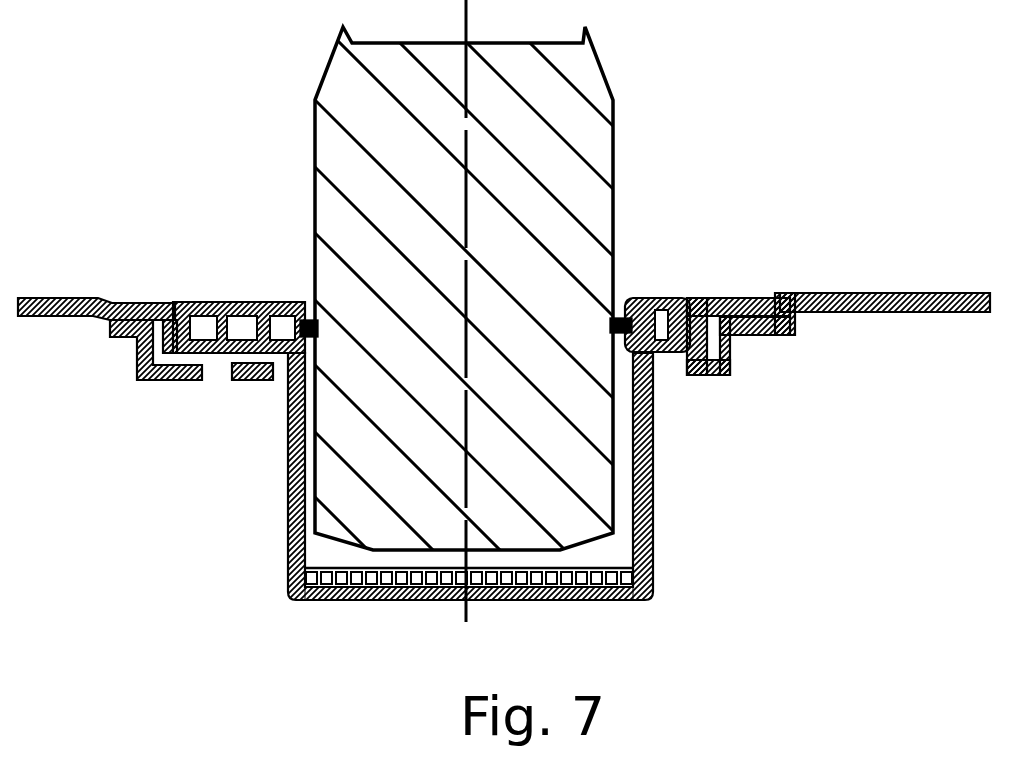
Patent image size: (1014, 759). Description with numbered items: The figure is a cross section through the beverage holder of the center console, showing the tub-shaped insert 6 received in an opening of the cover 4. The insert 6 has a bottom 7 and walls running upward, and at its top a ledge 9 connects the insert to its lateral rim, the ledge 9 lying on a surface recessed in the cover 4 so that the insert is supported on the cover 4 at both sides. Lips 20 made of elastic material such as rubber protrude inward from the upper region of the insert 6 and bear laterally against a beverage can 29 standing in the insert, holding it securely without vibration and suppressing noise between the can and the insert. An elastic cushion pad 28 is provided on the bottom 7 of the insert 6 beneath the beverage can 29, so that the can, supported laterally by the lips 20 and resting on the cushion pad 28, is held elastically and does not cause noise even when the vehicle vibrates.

The beverage can 29 is at (590, 100).
The lips 20 is at (307, 300).
The cover 4 is at (848, 292).
The ledge 9 is at (162, 382).
The tub-shaped insert 6 is at (681, 471).
The elastic cushion pad 28 is at (398, 602).
The bottom 7 is at (607, 602).